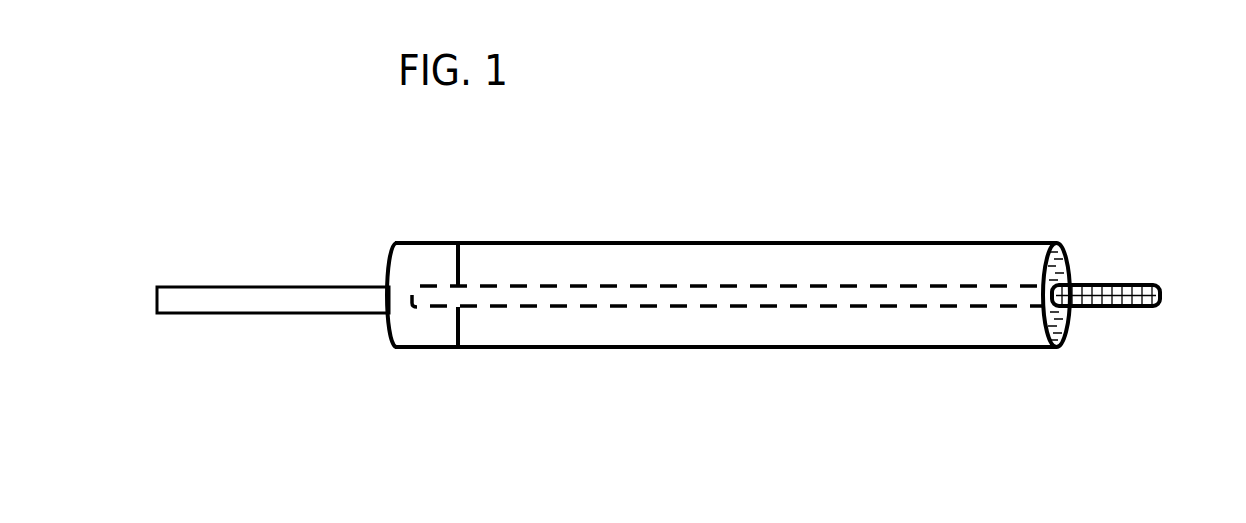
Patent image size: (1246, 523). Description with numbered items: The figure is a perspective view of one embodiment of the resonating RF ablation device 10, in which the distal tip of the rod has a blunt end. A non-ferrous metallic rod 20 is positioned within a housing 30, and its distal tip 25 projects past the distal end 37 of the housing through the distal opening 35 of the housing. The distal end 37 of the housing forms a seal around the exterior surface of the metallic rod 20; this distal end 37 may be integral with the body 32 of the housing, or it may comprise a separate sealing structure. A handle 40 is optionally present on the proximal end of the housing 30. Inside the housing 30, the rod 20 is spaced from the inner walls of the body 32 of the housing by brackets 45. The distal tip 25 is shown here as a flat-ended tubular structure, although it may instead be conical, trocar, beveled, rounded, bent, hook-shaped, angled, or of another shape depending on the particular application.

The resonating RF ablation device 10 is at (1017, 139).
The non-ferrous metallic rod 20 is at (820, 248).
The distal tip 25 is at (1118, 310).
The housing 30 is at (683, 207).
The body of the housing 32 is at (768, 350).
The distal opening 35 is at (1082, 275).
The distal end of the housing 37 is at (1067, 329).
The handle 40 is at (245, 287).
The brackets 45 is at (474, 249).